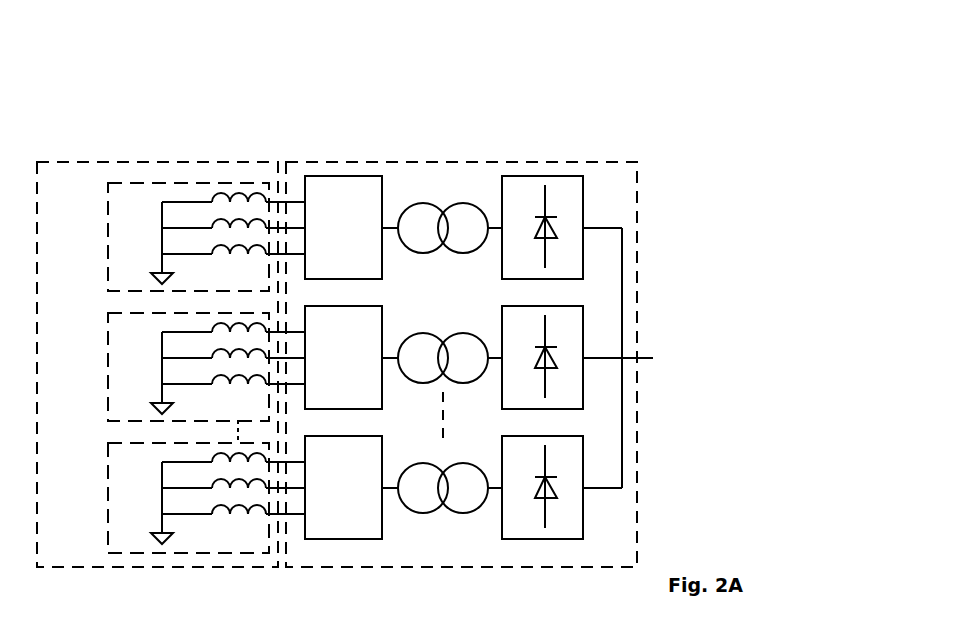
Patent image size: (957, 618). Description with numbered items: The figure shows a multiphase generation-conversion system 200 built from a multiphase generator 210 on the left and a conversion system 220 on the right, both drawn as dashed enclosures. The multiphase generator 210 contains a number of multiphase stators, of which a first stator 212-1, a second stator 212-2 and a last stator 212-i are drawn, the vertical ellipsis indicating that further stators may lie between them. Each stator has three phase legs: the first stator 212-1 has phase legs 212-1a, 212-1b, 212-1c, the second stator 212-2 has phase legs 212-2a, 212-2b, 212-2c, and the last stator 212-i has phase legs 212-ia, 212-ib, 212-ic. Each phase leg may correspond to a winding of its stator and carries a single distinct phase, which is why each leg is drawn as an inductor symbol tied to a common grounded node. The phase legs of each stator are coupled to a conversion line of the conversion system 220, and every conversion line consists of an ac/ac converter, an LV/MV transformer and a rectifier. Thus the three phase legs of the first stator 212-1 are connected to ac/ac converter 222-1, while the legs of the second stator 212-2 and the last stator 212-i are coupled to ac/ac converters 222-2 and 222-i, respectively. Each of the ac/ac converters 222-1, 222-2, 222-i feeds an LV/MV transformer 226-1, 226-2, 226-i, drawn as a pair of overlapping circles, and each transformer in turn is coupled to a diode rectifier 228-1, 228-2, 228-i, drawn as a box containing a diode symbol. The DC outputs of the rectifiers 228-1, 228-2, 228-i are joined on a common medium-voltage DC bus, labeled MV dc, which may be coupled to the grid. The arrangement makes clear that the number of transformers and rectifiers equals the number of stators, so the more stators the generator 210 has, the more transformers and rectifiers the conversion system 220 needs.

The generation-conversion system 200 is at (789, 35).
The multiphase generator 210 is at (230, 162).
The conversion system 220 is at (607, 162).
The first multiphase stator 212-1 is at (106, 232).
The second multiphase stator 212-2 is at (106, 362).
The i-th multiphase stator 212-i is at (106, 495).
The phase leg 212-1a is at (208, 202).
The phase leg 212-1b is at (224, 227).
The phase leg 212-1c is at (224, 253).
The phase leg 212-2a is at (208, 332).
The phase leg 212-2b is at (224, 357).
The phase leg 212-2c is at (224, 383).
The phase leg 212-ia is at (206, 462).
The phase leg 212-ib is at (222, 487).
The phase leg 212-ic is at (222, 513).
The ac/ac converter 222-1 is at (384, 206).
The ac/ac converter 222-2 is at (384, 336).
The ac/ac converter 222-i is at (384, 466).
The LV/MV transformer 226-1 is at (440, 204).
The LV/MV transformer 226-2 is at (440, 336).
The LV/MV transformer 226-i is at (440, 466).
The diode rectifier 228-1 is at (585, 213).
The diode rectifier 228-2 is at (585, 327).
The diode rectifier 228-i is at (585, 457).